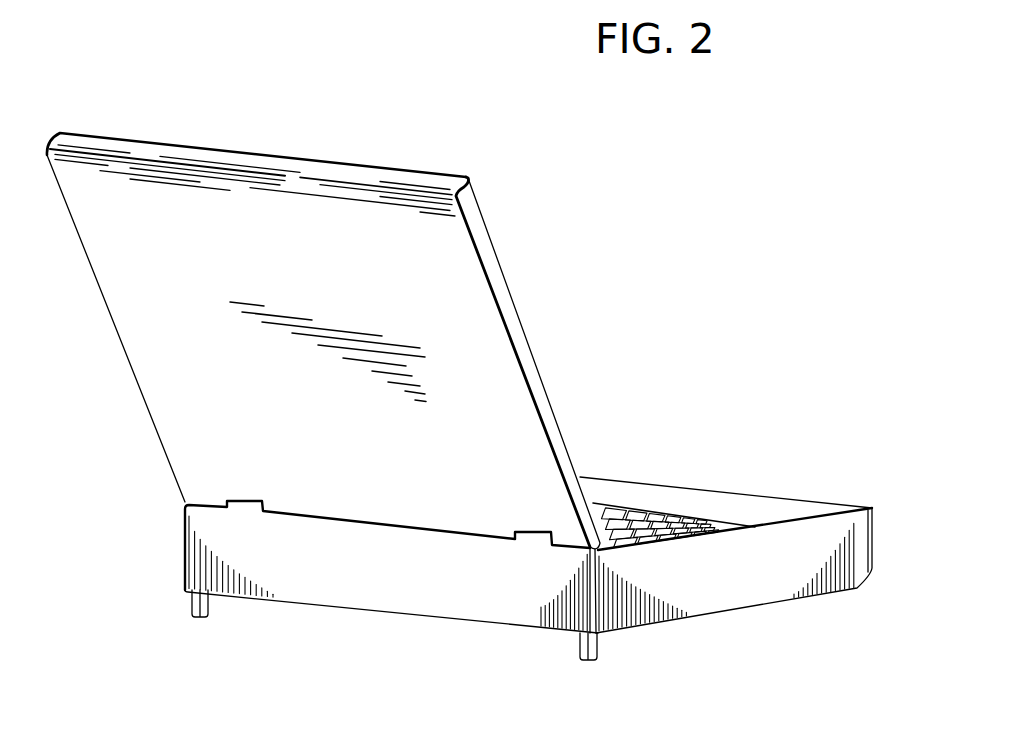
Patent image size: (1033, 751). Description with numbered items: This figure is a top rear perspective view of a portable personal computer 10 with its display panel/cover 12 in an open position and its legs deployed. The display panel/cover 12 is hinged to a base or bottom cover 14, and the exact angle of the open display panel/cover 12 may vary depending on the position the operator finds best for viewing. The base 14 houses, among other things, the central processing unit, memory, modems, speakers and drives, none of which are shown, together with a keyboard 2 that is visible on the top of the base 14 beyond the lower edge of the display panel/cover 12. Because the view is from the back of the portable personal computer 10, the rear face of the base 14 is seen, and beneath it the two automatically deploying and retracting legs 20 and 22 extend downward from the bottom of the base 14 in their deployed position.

The portable personal computer 10 is at (657, 362).
The display panel/cover 12 is at (132, 368).
The base or bottom cover 14 is at (425, 598).
The keyboard 2 is at (683, 545).
The automatically deploying and retracting leg 20 is at (598, 658).
The automatically deploying and retracting leg 22 is at (210, 612).